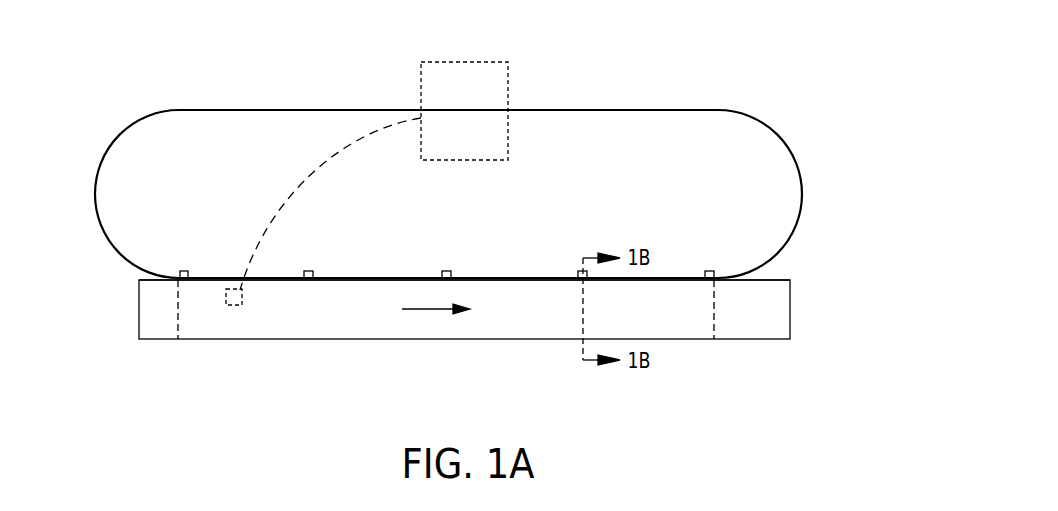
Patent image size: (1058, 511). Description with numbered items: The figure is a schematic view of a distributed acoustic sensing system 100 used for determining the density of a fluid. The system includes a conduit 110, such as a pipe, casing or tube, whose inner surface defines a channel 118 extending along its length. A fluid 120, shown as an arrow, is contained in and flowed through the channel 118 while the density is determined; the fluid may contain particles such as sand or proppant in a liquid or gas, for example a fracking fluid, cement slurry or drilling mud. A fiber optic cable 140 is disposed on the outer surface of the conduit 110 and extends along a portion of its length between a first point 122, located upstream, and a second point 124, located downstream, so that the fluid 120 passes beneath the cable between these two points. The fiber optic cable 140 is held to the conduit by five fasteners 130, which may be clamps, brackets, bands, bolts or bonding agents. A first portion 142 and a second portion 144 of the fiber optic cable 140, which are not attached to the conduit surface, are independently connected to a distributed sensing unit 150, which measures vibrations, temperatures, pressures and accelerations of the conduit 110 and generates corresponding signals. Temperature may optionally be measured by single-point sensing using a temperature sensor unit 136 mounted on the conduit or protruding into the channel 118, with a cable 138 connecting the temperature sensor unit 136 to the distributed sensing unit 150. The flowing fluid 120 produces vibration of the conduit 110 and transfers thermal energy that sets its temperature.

The distributed acoustic sensing system 100 is at (685, 62).
The conduit 110 is at (336, 339).
The channel 118 is at (280, 322).
The fluid 120 is at (436, 313).
The first point 122 is at (177, 323).
The second point 124 is at (715, 323).
The fasteners 130 is at (178, 270).
The temperature sensor unit 136 is at (232, 305).
The cable 138 is at (298, 190).
The fiber optic cable 140 is at (378, 276).
The first portion 142 is at (215, 110).
The second portion 144 is at (580, 110).
The distributed sensing unit 150 is at (482, 126).